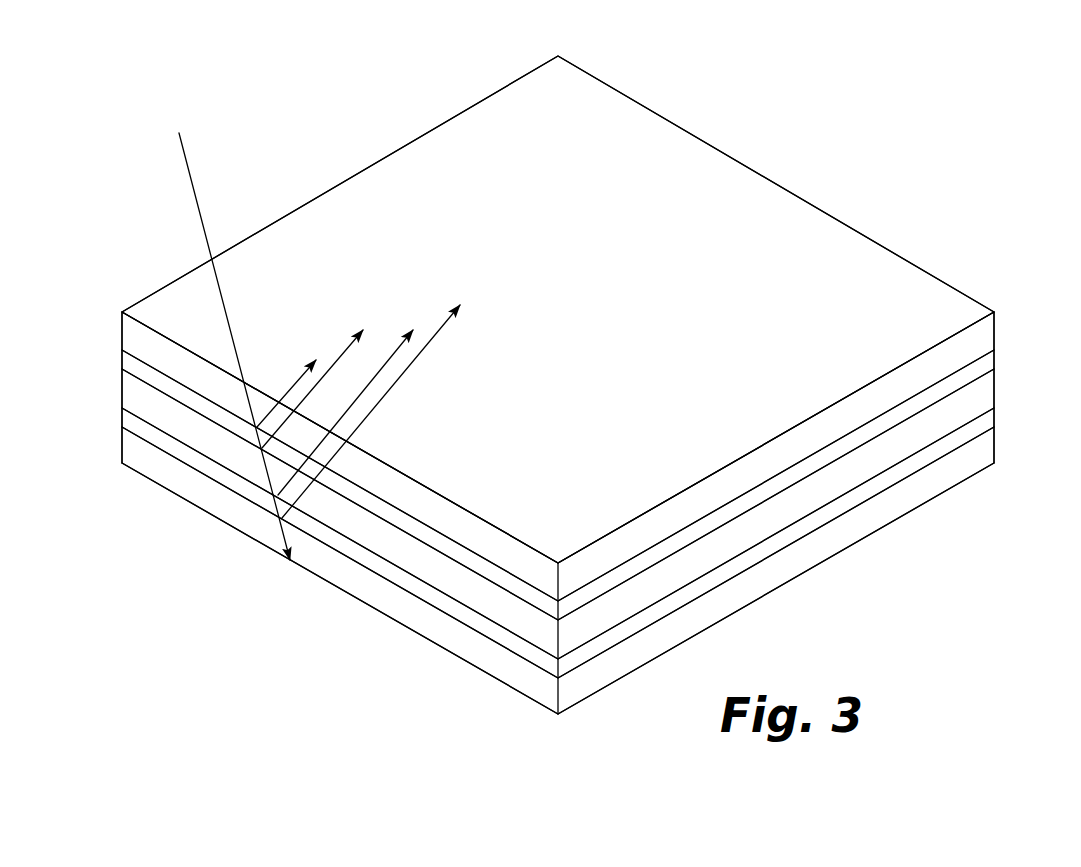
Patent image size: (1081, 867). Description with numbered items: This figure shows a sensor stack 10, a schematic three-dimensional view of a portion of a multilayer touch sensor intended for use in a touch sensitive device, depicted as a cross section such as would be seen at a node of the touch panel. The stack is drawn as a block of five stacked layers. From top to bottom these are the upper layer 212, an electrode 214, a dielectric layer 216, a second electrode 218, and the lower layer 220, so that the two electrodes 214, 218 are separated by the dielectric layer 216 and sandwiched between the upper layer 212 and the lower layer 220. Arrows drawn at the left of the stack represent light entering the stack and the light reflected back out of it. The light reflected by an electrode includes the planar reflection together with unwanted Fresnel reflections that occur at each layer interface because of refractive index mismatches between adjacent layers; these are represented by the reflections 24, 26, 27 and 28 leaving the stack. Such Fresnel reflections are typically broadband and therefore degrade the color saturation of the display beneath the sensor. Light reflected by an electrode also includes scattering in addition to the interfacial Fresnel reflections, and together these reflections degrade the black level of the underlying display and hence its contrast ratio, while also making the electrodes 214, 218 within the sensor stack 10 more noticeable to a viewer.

The sensor stack 10 is at (870, 158).
The reflection 24 is at (423, 352).
The reflection 26 is at (343, 355).
The reflection 27 is at (394, 355).
The reflection 28 is at (292, 385).
The upper layer 212 is at (986, 331).
The electrode 214 is at (987, 363).
The dielectric layer 216 is at (987, 392).
The electrode 218 is at (987, 422).
The lower layer 220 is at (987, 453).